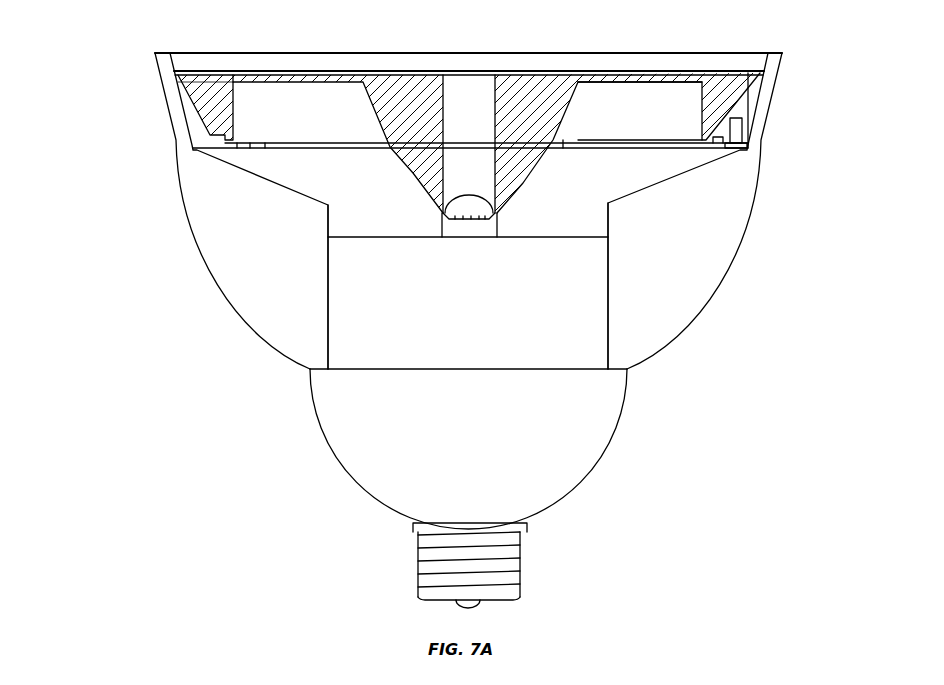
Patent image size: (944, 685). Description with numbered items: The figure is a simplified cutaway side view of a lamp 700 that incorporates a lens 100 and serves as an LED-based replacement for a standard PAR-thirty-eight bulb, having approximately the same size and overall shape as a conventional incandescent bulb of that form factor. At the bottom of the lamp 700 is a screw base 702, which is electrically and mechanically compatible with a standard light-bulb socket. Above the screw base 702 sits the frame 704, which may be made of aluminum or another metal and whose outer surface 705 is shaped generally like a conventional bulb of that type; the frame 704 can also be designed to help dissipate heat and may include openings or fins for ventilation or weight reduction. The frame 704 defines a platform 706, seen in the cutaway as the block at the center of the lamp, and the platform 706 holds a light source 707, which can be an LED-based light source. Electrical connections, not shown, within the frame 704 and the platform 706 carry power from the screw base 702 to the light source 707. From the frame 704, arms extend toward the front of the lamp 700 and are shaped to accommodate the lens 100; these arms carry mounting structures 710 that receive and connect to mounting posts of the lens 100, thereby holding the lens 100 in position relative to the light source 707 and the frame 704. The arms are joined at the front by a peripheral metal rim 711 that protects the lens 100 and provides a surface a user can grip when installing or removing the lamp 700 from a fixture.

The lamp 700 is at (130, 386).
The lens 100 is at (533, 85).
The screw base 702 is at (520, 570).
The frame 704 is at (468, 449).
The outer surface 705 is at (308, 391).
The platform 706 is at (468, 286).
The light source 707 is at (470, 230).
The mounting structures 710 is at (735, 151).
The peripheral metal rim 711 is at (196, 63).